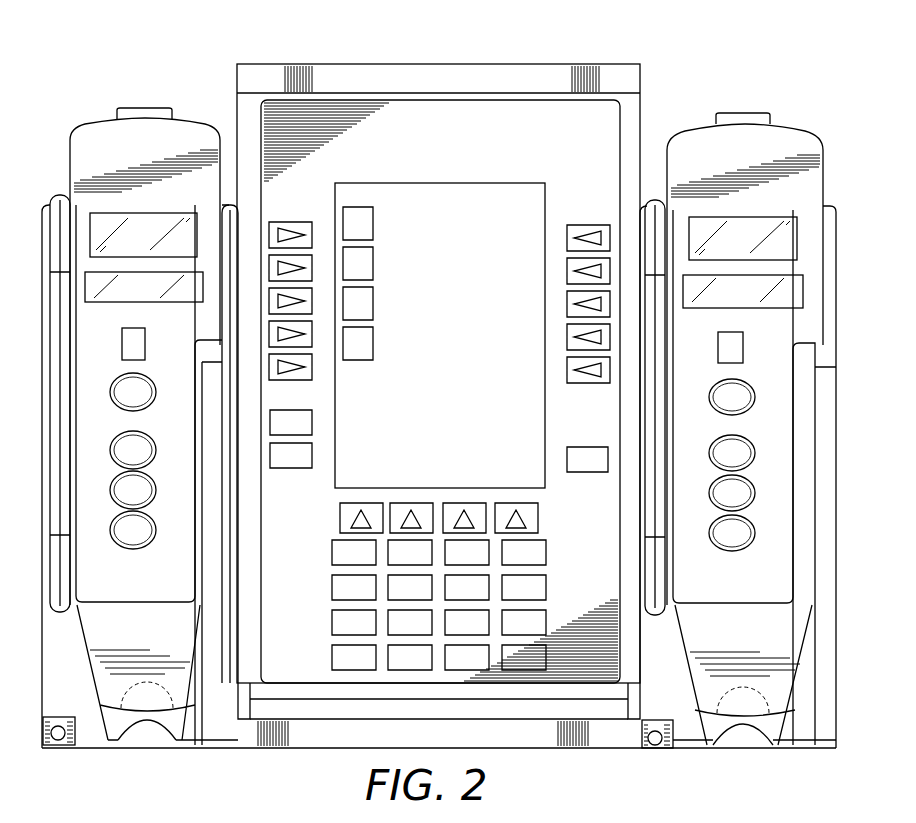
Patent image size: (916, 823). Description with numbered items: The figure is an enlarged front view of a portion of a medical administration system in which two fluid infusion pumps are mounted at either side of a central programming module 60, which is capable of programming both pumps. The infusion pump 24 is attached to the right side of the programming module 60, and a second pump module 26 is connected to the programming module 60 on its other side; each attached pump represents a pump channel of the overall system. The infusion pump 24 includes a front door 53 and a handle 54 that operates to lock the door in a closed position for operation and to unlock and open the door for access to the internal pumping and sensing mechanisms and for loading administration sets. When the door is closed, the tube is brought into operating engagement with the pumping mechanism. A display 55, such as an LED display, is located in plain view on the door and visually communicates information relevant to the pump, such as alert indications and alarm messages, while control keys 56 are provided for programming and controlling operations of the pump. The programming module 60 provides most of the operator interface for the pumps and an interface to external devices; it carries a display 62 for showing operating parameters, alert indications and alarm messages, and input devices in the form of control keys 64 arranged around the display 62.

The infusion pump 24 is at (780, 411).
The second pump module 26 is at (141, 108).
The front door 53 is at (822, 622).
The handle 54 is at (780, 685).
The display 55 is at (797, 238).
The control keys 56 is at (755, 397).
The programming module 60 is at (503, 64).
The display 62 is at (442, 183).
The control keys 64 is at (311, 378).